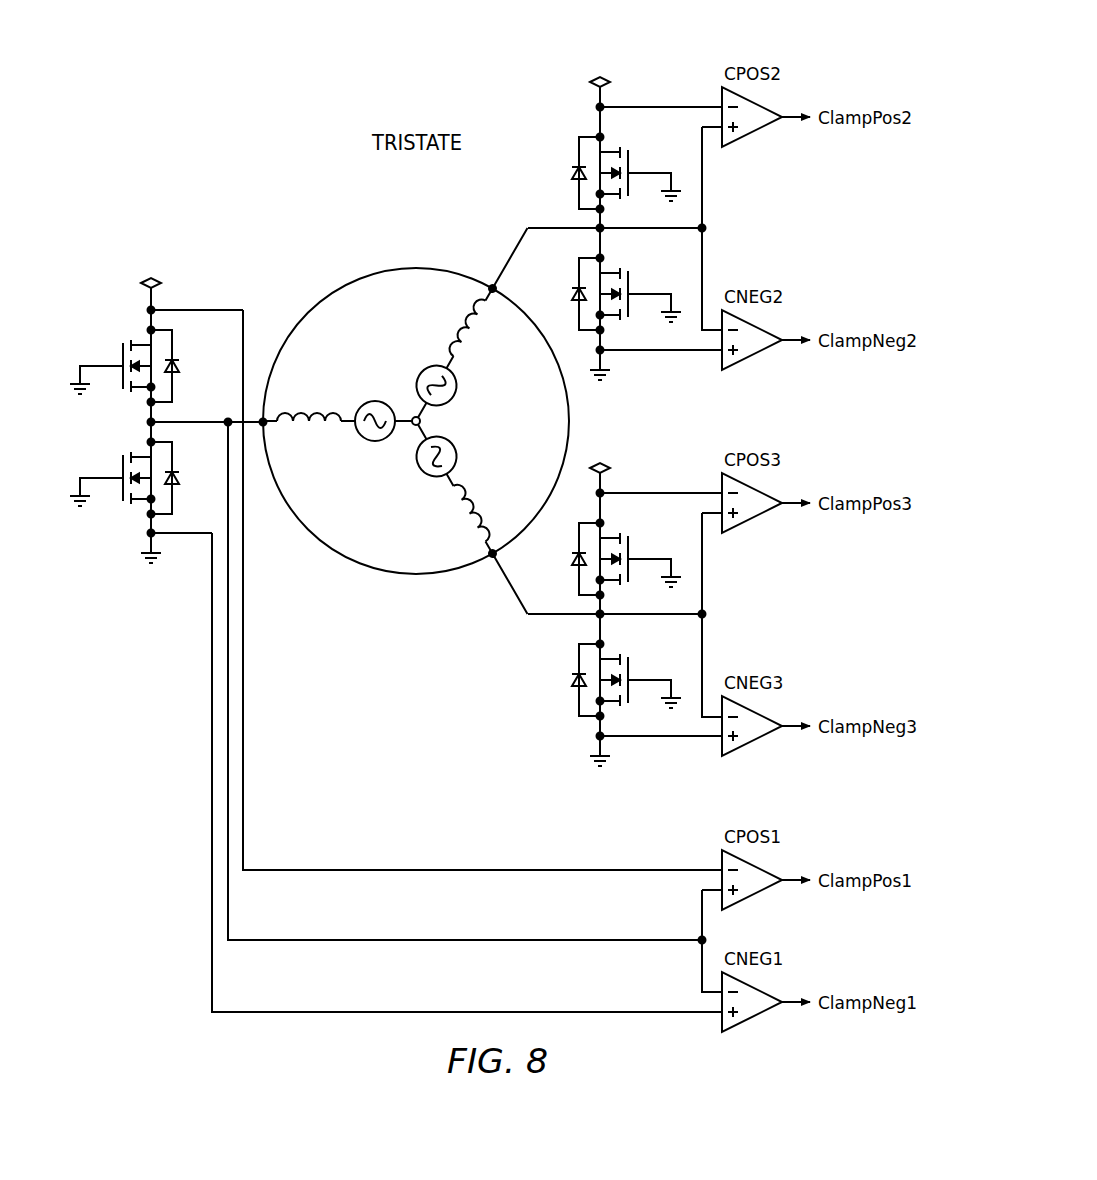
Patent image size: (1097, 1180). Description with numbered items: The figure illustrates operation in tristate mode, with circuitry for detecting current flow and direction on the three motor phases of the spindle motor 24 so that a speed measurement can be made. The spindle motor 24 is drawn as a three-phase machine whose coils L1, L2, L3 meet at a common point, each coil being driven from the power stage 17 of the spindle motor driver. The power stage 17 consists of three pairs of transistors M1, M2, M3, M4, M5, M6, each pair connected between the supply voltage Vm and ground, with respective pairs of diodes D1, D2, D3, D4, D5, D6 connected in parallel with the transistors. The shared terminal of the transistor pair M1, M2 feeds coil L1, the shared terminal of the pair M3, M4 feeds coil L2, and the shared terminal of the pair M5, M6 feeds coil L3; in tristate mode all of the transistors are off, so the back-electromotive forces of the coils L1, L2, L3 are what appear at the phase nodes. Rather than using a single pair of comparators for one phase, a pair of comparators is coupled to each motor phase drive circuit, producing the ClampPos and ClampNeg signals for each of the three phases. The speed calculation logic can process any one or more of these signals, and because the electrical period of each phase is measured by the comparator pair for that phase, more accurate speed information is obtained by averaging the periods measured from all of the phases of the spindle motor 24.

The power stage 17 is at (103, 297).
The spindle motor 24 is at (326, 296).
The transistor M1 is at (112, 361).
The transistor M2 is at (112, 473).
The transistor M3 is at (639, 170).
The transistor M4 is at (639, 291).
The transistor M5 is at (639, 556).
The transistor M6 is at (639, 677).
The diode D1 is at (179, 366).
The diode D2 is at (179, 478).
The diode D3 is at (572, 173).
The diode D4 is at (572, 294).
The diode D5 is at (572, 559).
The diode D6 is at (572, 680).
The coil L1 is at (309, 404).
The coil L2 is at (458, 326).
The coil L3 is at (485, 511).